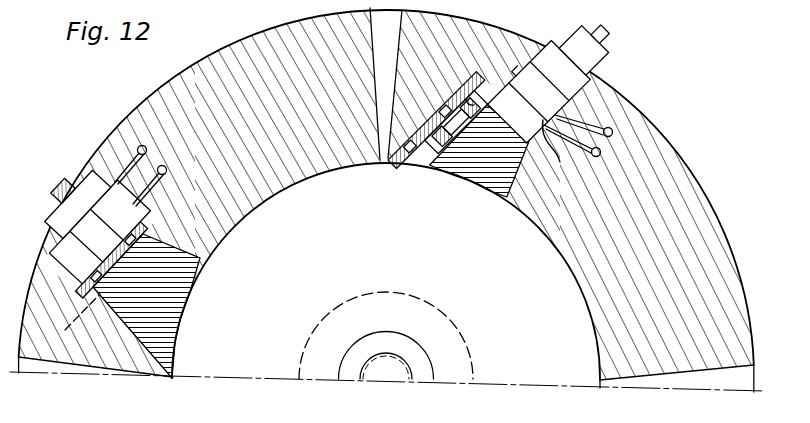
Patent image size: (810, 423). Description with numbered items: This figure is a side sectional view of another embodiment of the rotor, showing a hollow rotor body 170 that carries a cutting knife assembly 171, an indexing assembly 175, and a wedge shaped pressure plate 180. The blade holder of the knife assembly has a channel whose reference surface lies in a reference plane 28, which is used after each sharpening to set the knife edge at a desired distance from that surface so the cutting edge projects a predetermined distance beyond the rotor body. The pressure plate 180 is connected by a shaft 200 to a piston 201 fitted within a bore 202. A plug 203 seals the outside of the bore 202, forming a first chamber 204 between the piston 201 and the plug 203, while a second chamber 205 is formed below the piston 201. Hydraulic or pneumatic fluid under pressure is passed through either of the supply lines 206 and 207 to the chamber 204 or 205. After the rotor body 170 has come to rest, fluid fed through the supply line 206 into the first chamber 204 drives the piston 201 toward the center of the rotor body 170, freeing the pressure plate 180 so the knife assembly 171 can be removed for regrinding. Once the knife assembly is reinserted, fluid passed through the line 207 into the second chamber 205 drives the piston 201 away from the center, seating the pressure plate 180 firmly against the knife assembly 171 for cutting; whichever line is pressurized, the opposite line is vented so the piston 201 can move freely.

The reference plane 28 is at (71, 325).
The hollow rotor body 170 is at (405, 211).
The cutting knife assembly 171 is at (398, 122).
The indexing assembly 175 is at (467, 73).
The wedge shaped pressure plate 180 is at (473, 167).
The shaft 200 is at (521, 113).
The piston 201 is at (524, 66).
The bore 202 is at (512, 90).
The plug 203 is at (562, 86).
The first chamber 204 is at (590, 70).
The second chamber 205 is at (560, 160).
The supply line 206 is at (613, 132).
The supply line 207 is at (600, 152).